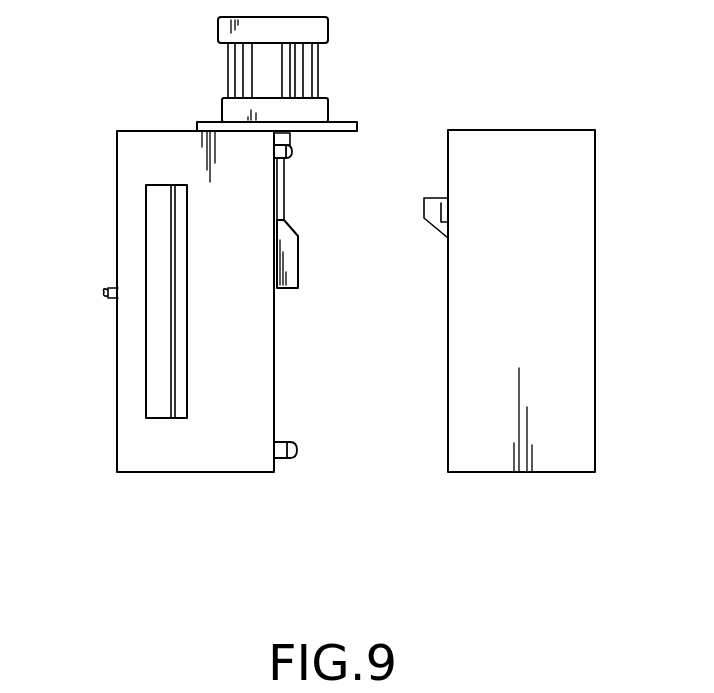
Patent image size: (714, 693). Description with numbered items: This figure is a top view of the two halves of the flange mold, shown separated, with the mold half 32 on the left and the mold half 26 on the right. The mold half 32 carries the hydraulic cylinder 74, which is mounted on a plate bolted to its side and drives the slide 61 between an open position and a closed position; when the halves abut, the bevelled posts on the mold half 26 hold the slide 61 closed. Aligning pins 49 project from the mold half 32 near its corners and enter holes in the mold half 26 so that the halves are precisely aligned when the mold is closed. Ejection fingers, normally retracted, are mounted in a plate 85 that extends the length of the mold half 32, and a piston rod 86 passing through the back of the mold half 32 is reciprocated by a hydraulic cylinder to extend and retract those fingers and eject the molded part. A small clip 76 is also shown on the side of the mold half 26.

The mold half 26 is at (566, 472).
The mold half 32 is at (235, 473).
The aligning pins 49 is at (292, 152).
The slide 61 is at (300, 262).
The hydraulic cylinder 74 is at (272, 78).
The clip 76 is at (435, 216).
The plate 85 is at (158, 220).
The piston rod 86 is at (108, 297).